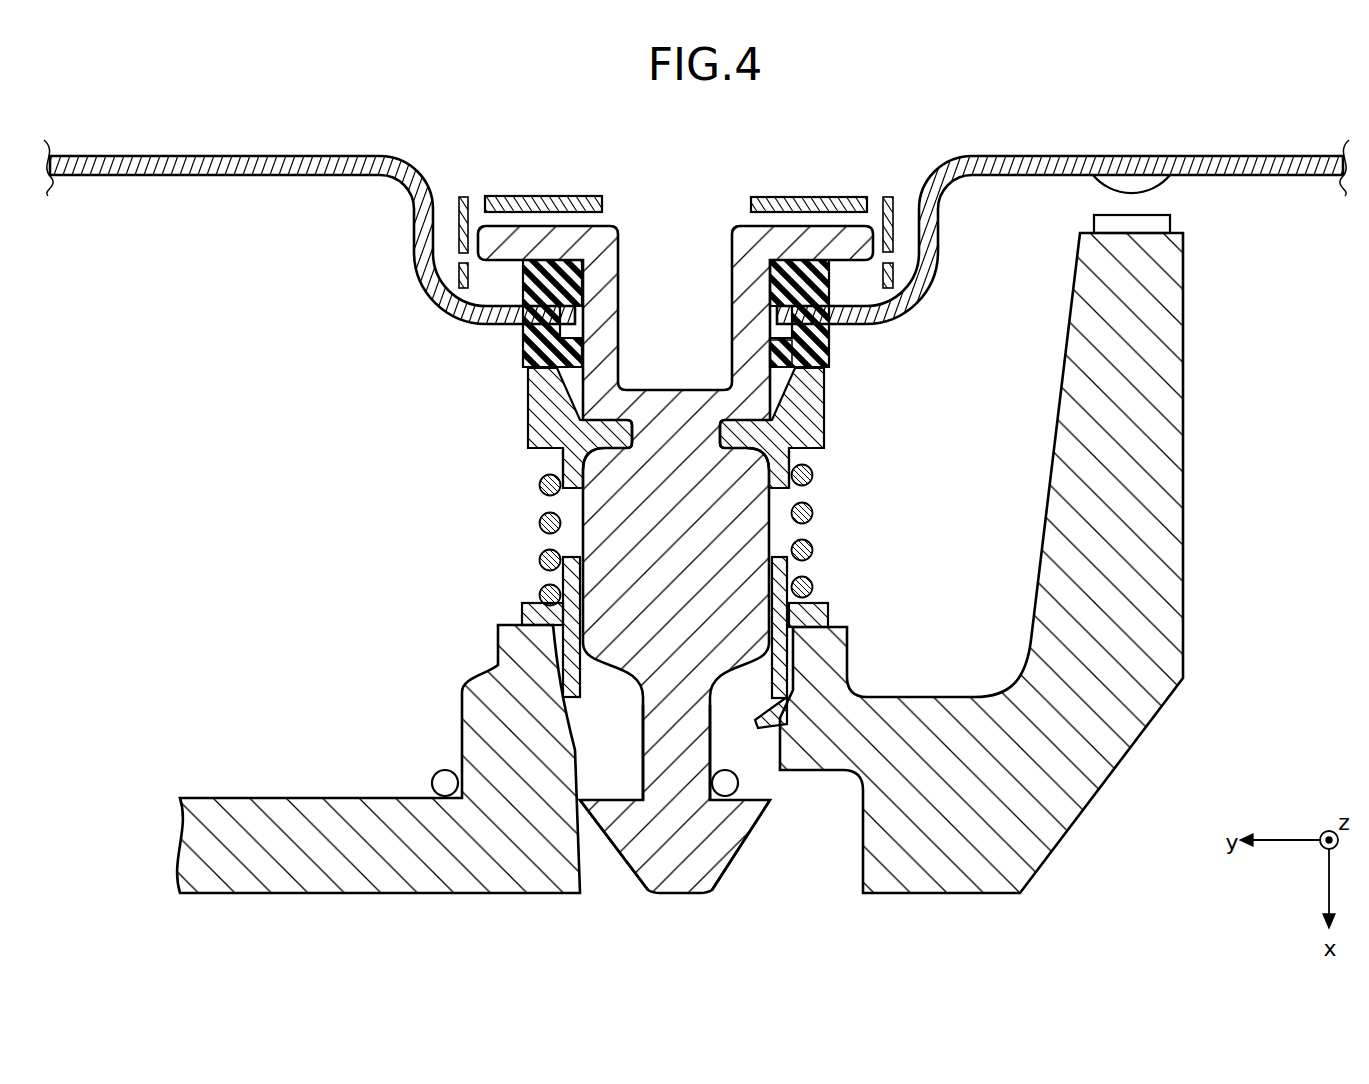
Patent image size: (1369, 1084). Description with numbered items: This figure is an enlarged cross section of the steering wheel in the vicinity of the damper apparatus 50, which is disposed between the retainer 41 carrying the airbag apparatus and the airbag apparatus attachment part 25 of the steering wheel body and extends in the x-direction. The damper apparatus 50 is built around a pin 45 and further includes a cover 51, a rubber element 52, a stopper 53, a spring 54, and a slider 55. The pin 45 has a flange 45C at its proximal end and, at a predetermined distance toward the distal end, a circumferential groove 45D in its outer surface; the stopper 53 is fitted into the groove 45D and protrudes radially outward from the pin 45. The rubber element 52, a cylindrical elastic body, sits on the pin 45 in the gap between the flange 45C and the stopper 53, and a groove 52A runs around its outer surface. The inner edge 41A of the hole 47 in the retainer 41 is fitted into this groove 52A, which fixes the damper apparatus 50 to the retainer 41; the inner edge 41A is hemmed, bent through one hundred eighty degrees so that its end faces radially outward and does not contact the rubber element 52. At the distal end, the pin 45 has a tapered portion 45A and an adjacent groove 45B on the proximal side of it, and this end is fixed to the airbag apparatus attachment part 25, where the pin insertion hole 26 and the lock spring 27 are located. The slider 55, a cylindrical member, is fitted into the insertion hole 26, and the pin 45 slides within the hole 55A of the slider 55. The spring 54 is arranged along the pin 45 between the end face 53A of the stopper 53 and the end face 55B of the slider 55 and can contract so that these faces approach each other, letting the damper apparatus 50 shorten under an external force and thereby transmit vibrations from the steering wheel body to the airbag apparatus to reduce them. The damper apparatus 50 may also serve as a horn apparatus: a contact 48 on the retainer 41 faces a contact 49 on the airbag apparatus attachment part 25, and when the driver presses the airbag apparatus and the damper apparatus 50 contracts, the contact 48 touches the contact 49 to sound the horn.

The airbag apparatus attachment part 25 is at (316, 797).
The pin insertion hole 26 is at (569, 715).
The lock spring 27 is at (738, 783).
The retainer 41 is at (283, 176).
The inner edge 41A is at (558, 320).
The pin 45 is at (692, 905).
The tapered portion 45A is at (727, 842).
The groove 45B is at (641, 766).
The flange 45C is at (505, 242).
The groove 45D is at (630, 437).
The hole 47 is at (795, 356).
The contact 48 is at (1168, 181).
The contact 49 is at (1171, 224).
The damper apparatus 50 is at (380, 382).
The cover 51 is at (781, 175).
The rubber element 52 is at (557, 290).
The groove 52A is at (525, 333).
The stopper 53 is at (527, 398).
The end face 53A is at (530, 452).
The spring 54 is at (538, 522).
The slider 55 is at (540, 617).
The hole 55A is at (590, 674).
The end face 55B is at (522, 600).